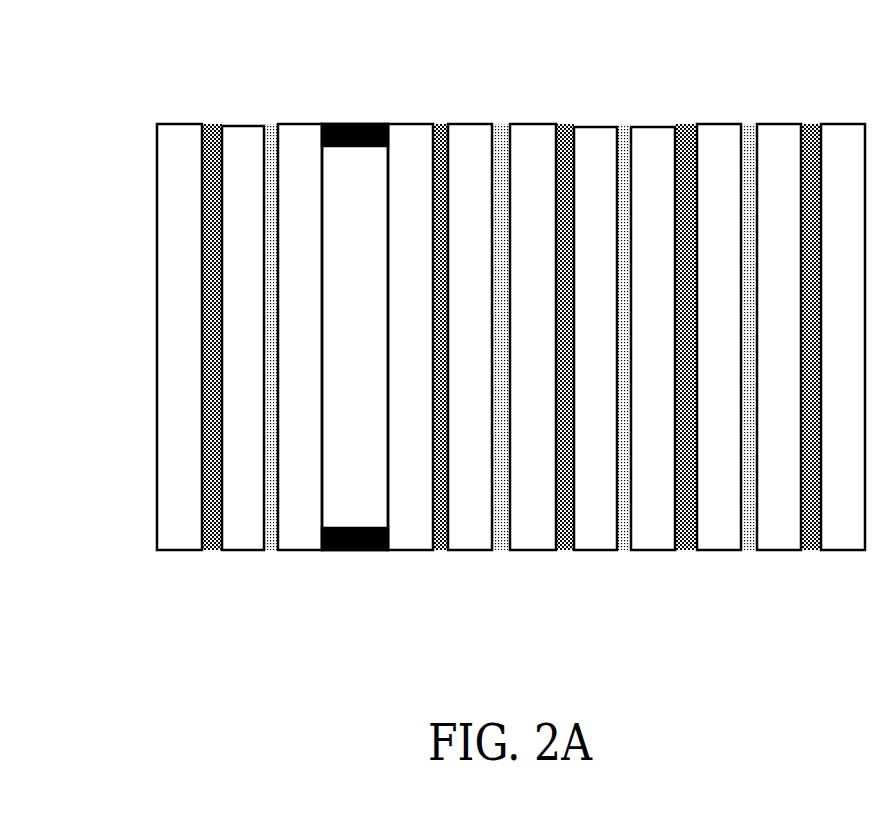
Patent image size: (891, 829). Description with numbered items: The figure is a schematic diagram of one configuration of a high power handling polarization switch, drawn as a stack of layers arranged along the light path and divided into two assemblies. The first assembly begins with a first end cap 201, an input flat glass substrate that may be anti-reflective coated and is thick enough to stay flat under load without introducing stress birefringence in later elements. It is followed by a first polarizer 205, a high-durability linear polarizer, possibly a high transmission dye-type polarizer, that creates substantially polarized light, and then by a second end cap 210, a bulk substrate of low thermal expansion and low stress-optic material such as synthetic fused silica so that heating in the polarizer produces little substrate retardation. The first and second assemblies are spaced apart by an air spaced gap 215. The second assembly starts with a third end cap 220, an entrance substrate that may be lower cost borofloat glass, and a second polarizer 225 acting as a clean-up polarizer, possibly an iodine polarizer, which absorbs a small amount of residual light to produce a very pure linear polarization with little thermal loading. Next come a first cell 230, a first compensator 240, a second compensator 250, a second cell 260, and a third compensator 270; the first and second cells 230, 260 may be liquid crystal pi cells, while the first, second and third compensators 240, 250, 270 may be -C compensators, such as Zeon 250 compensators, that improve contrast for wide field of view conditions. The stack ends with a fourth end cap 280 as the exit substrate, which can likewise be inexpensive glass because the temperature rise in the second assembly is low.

The first end cap 201 is at (136, 553).
The first polarizer 205 is at (233, 118).
The second end cap 210 is at (290, 555).
The air spaced gap 215 is at (346, 108).
The third end cap 220 is at (396, 558).
The second polarizer 225 is at (470, 118).
The first cell 230 is at (536, 559).
The first compensator 240 is at (593, 118).
The second compensator 250 is at (645, 557).
The second cell 260 is at (700, 118).
The third compensator 270 is at (773, 558).
The fourth end cap 280 is at (831, 559).